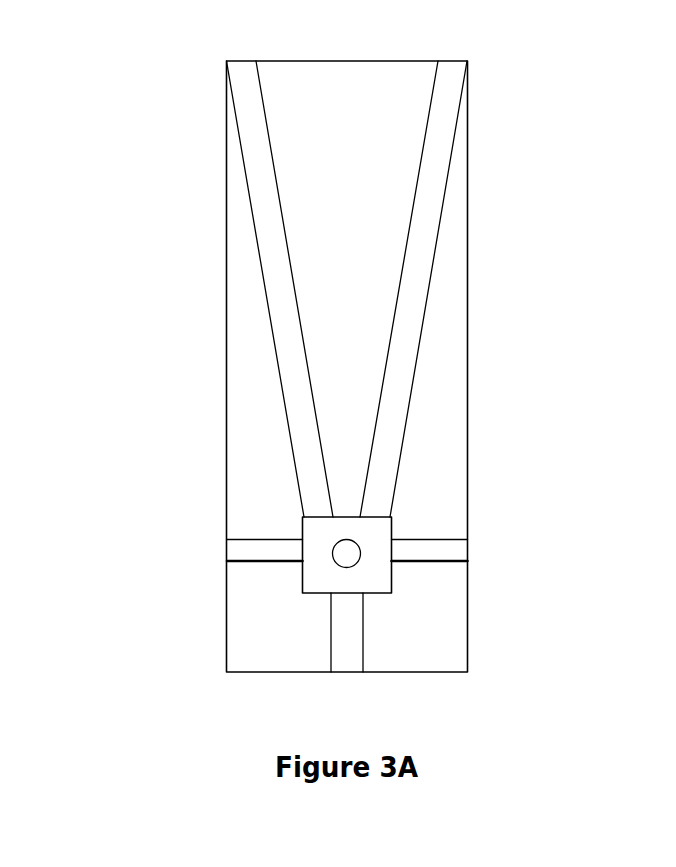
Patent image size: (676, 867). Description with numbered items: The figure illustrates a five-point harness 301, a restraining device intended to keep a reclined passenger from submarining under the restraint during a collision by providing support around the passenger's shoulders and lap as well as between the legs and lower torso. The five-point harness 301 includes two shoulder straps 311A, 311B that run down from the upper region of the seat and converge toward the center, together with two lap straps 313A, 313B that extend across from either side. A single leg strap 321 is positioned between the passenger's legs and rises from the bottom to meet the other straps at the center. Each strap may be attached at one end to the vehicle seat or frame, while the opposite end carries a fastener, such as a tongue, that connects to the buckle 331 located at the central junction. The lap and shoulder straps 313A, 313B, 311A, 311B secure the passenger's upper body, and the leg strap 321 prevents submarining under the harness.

The five-point harness 301 is at (329, 702).
The shoulder strap 311A is at (292, 356).
The shoulder strap 311B is at (403, 355).
The lap strap 313A is at (265, 555).
The lap strap 313B is at (420, 561).
The leg strap 321 is at (346, 645).
The buckle 331 is at (392, 528).